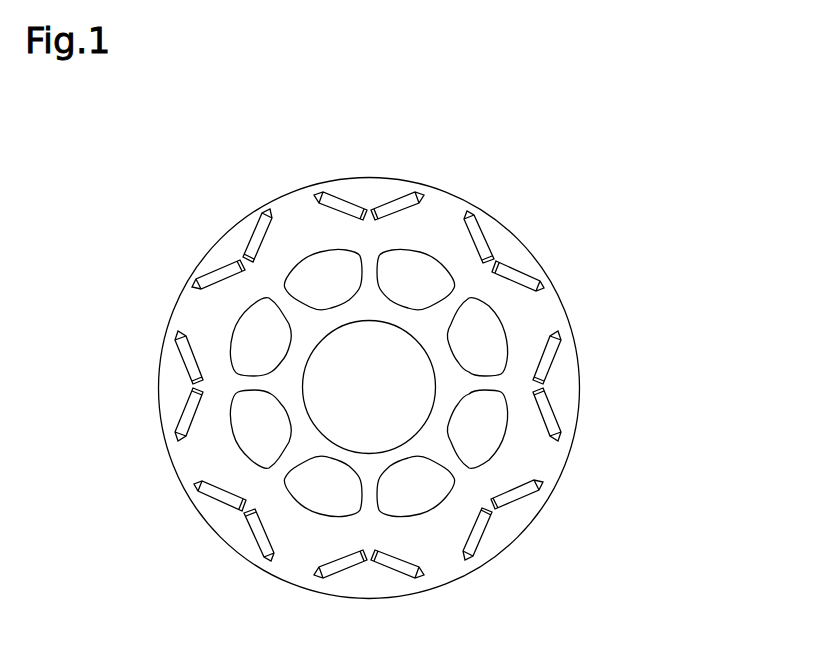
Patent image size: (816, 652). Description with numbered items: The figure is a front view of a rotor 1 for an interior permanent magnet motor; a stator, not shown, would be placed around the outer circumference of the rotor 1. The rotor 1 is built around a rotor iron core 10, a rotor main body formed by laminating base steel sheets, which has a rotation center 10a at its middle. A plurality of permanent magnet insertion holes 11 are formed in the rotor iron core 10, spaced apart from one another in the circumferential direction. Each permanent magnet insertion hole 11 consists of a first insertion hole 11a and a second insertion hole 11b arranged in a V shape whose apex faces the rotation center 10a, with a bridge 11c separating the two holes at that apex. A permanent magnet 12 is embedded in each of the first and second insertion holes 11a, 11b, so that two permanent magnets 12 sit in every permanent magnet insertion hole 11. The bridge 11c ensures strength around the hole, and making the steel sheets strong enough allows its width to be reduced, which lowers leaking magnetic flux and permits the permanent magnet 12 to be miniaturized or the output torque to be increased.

The rotor 1 is at (287, 194).
The rotor iron core 10 is at (373, 179).
The rotation center 10a is at (369, 388).
The permanent magnet insertion hole 11 is at (655, 325).
The first insertion hole 11a is at (556, 352).
The second insertion hole 11b is at (556, 425).
The bridge 11c is at (540, 384).
The permanent magnet 12 is at (484, 229).